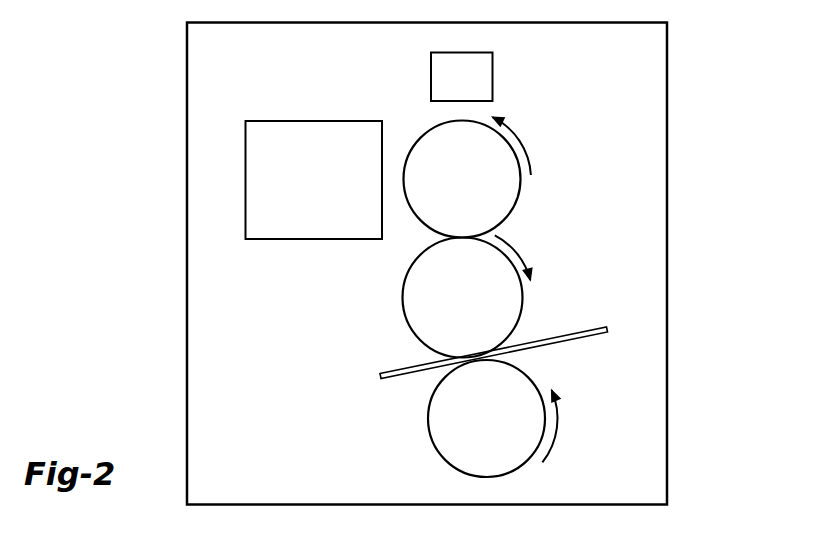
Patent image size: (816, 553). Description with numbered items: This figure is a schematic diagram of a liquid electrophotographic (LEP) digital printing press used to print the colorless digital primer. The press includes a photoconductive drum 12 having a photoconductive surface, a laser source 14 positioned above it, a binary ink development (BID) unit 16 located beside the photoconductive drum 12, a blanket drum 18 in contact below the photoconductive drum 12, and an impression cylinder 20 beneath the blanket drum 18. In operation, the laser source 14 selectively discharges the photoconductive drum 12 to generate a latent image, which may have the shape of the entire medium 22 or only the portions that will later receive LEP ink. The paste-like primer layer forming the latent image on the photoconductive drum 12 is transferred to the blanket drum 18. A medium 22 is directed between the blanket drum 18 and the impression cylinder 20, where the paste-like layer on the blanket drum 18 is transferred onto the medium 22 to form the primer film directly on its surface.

The photoconductive drum 12 is at (454, 184).
The laser source 14 is at (453, 84).
The binary ink development (BID) unit 16 is at (304, 184).
The blanket drum 18 is at (454, 303).
The impression cylinder 20 is at (478, 424).
The medium 22 is at (563, 335).